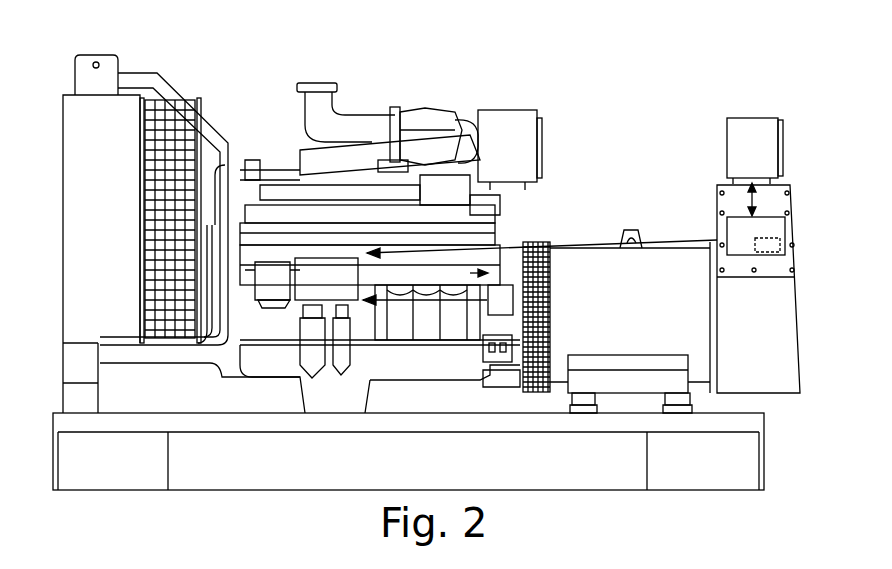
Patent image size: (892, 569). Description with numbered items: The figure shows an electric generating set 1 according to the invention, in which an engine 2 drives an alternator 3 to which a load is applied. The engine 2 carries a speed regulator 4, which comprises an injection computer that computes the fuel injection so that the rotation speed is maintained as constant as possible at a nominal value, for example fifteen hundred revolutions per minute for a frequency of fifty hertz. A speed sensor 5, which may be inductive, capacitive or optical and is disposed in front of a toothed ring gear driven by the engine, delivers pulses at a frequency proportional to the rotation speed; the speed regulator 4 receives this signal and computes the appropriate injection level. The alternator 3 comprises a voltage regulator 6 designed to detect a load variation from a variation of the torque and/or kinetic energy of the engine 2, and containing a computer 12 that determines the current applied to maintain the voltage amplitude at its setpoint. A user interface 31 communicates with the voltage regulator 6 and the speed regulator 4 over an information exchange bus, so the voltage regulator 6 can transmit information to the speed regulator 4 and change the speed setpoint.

The electric generating set 1 is at (383, 105).
The engine 2 is at (262, 113).
The alternator 3 is at (663, 135).
The speed regulator 4 is at (320, 275).
The speed sensor 5 is at (500, 290).
The voltage regulator 6 is at (778, 225).
The computer 12 is at (778, 250).
The user interface 31 is at (755, 122).